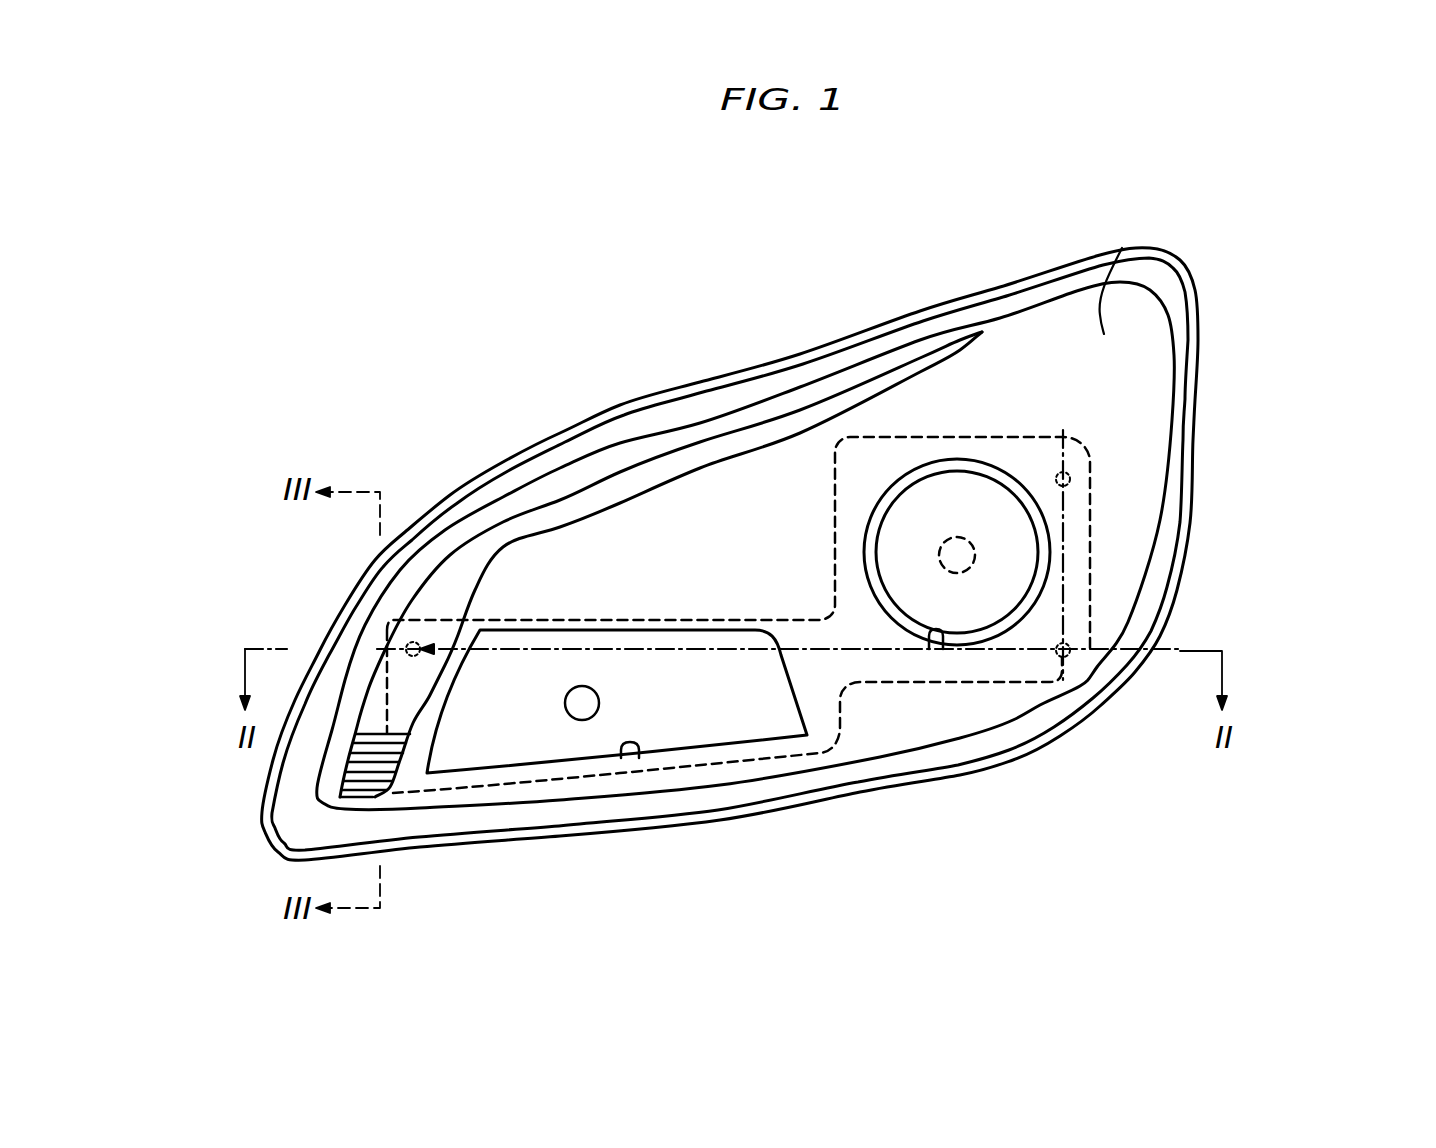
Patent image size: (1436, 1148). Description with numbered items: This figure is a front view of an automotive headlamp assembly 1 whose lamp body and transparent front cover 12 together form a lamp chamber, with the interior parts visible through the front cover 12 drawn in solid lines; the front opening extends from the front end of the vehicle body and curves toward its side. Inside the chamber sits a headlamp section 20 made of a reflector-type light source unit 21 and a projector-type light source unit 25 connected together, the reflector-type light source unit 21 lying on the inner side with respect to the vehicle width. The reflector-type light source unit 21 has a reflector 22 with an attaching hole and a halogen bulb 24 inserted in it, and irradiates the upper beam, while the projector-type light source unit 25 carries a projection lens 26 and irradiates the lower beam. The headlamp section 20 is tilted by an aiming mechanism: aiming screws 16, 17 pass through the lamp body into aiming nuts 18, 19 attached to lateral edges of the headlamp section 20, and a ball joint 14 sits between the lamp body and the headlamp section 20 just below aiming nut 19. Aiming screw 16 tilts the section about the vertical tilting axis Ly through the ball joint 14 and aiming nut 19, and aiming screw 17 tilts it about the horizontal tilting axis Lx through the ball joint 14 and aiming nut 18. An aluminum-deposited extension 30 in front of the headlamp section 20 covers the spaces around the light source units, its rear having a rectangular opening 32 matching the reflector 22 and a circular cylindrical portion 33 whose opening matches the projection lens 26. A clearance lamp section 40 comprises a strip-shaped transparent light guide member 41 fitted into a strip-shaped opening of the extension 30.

The automotive headlamp assembly 1 is at (783, 549).
The front cover 12 is at (1122, 248).
The ball joint 14 is at (1066, 654).
The aiming screw 16 is at (322, 592).
The aiming screw 17 is at (1214, 438).
The aiming nut 18 is at (404, 640).
The aiming nut 19 is at (1074, 479).
The headlamp section 20 is at (882, 437).
The reflector-type light source unit 21 is at (617, 770).
The reflector 22 is at (617, 701).
The halogen bulb 24 is at (533, 742).
The projector-type light source unit 25 is at (957, 441).
The projection lens 26 is at (957, 500).
The extension 30 is at (1178, 346).
The rectangular opening 32 is at (634, 758).
The circular cylindrical portion 33 is at (938, 649).
The clearance lamp section 40 is at (343, 753).
The light guide member 41 is at (508, 524).
The horizontal tilting axis Lx is at (717, 650).
The vertical tilting axis Ly is at (1063, 518).